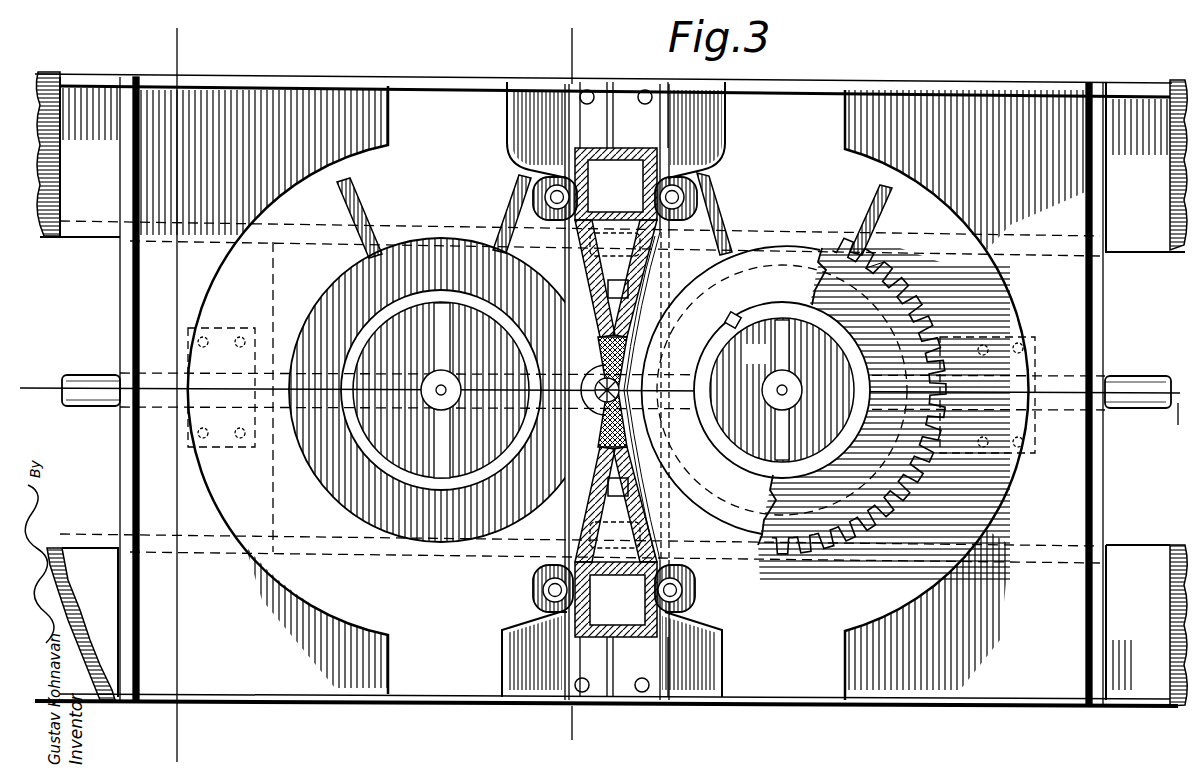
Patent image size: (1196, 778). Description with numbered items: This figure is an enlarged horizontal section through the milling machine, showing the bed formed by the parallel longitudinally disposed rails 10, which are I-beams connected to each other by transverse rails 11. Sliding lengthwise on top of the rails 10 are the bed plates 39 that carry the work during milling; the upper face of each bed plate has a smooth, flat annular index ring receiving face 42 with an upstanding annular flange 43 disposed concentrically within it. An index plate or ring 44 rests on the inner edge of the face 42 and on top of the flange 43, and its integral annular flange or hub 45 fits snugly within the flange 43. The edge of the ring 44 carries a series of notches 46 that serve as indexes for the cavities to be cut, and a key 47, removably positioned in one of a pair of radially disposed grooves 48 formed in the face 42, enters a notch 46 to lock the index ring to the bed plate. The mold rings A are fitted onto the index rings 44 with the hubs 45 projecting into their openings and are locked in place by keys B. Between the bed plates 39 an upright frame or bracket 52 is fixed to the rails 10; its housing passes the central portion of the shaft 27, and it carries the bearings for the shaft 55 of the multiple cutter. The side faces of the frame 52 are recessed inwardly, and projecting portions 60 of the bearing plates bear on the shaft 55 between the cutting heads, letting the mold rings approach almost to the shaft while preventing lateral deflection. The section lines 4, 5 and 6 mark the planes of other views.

The section line 4- 4 is at (600, 416).
The section line 5- 5 is at (568, 383).
The section line 6- 6 is at (176, 383).
The longitudinally disposed rails 10 is at (48, 238).
The transverse rails 11 is at (745, 300).
The shaft 27 is at (85, 372).
The bed plates 39 is at (606, 390).
The annular index ring receiving faces 42 is at (554, 428).
The upstanding annular flange 43 is at (370, 327).
The index plate or ring 44 is at (859, 396).
The annular flange or hub 45 is at (852, 414).
The notches 46 is at (898, 298).
The key 47 is at (757, 244).
The radially disposed grooves 48 is at (512, 200).
The upright frame or bracket 52 is at (630, 147).
The shaft of the multiple cutter 55 is at (628, 400).
The projecting portions 60 is at (622, 363).
The mold rings A is at (747, 527).
The keys B is at (729, 317).